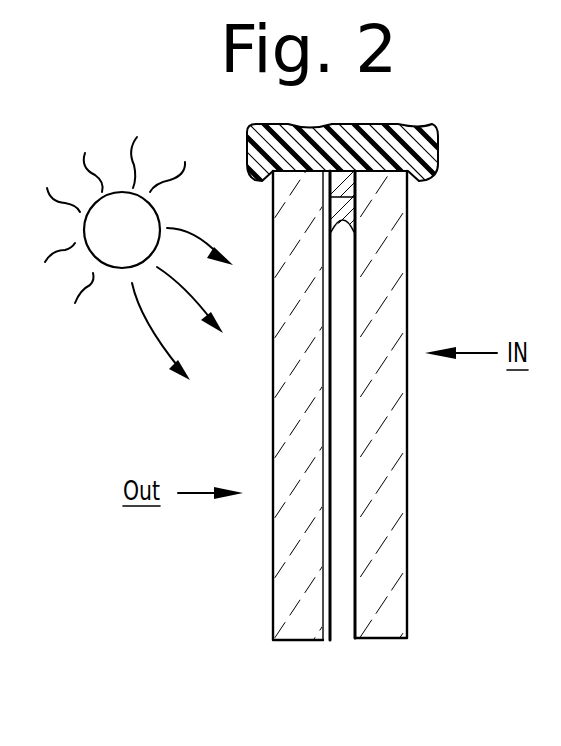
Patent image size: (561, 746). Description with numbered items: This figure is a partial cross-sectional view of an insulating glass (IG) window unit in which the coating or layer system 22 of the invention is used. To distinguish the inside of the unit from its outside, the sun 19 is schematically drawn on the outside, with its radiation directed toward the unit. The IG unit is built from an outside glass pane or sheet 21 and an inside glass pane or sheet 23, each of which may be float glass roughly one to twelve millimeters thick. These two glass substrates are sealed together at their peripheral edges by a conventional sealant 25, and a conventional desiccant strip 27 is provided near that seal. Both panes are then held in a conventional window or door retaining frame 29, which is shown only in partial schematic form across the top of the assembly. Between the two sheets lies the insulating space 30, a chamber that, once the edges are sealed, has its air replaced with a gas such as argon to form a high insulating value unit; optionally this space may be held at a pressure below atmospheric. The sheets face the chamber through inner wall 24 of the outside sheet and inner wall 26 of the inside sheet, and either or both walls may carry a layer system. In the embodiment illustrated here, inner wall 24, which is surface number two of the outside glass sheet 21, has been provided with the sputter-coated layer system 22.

The sun 19 is at (107, 246).
The outside glass pane or sheet 21 is at (272, 553).
The coating or layer system 22 is at (323, 596).
The inside glass pane or sheet 23 is at (408, 572).
The inner wall 24 is at (328, 426).
The sealant 25 is at (333, 221).
The inner wall 26 is at (356, 420).
The desiccant strip 27 is at (356, 179).
The window or door retaining frame 29 is at (397, 138).
The insulating space 30 is at (338, 620).